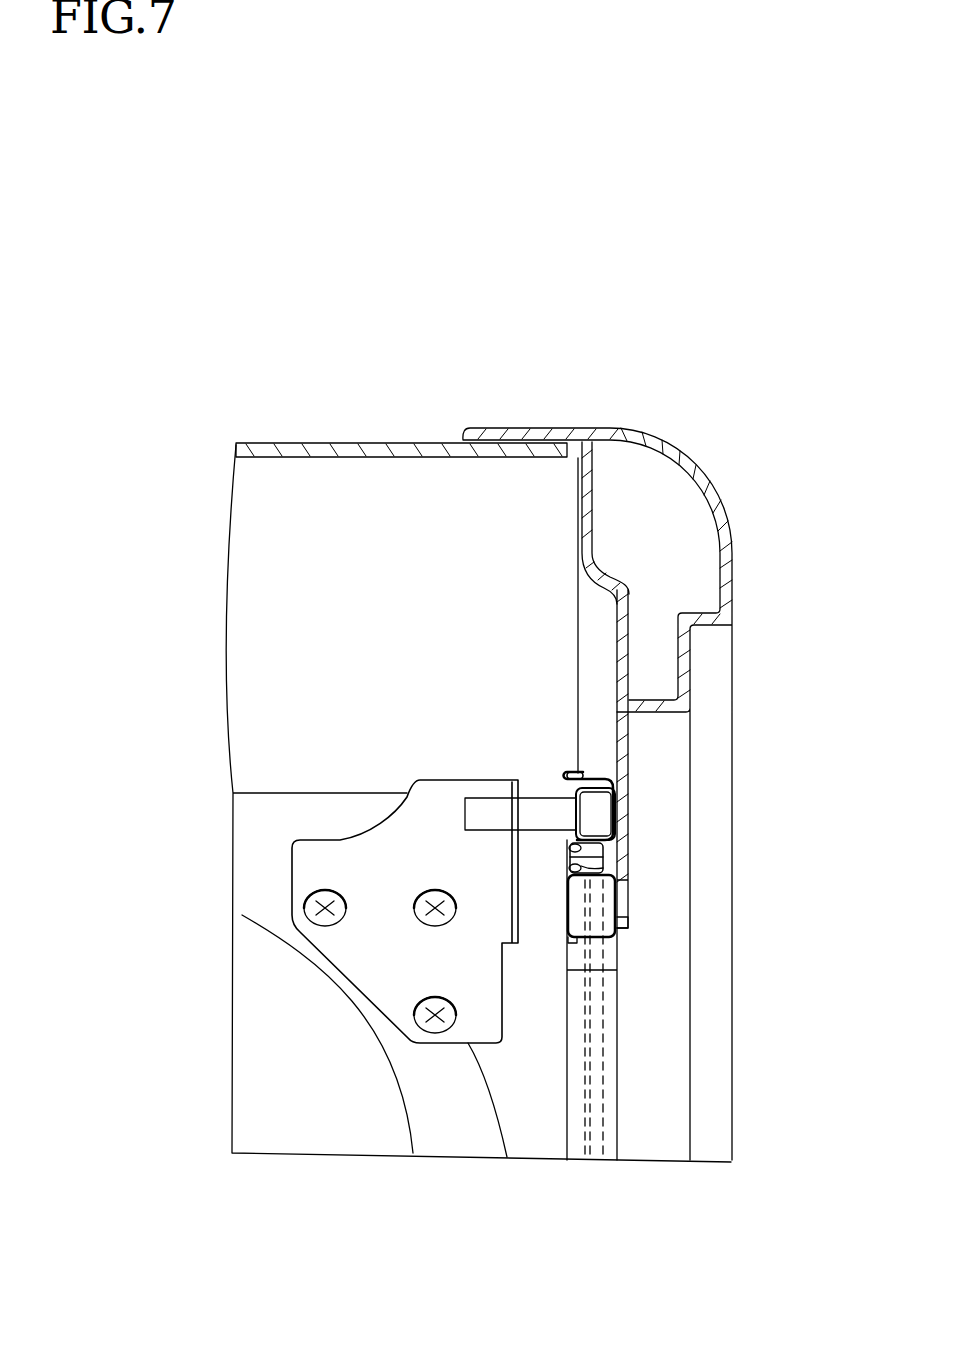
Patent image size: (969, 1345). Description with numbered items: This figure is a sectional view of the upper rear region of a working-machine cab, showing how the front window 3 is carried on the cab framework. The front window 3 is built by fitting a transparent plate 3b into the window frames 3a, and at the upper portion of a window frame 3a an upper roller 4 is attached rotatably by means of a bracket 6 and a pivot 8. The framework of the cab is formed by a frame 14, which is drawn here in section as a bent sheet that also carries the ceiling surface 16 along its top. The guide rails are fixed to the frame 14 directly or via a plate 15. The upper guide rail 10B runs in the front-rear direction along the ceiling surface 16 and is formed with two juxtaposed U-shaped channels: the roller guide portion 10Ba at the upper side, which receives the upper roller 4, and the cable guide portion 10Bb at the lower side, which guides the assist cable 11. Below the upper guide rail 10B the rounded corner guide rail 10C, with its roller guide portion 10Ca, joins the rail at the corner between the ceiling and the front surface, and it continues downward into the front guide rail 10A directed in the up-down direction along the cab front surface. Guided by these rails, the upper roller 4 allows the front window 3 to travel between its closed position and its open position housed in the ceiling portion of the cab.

The front window 3 is at (290, 790).
The window frames 3a is at (452, 1117).
The transparent plate 3b is at (268, 1048).
The upper rollers 4 is at (590, 813).
The brackets 6 is at (380, 960).
The pivots 8 is at (540, 813).
The front guide rail 10A is at (622, 1112).
The upper guide rail 10B is at (600, 773).
The roller guide portion 10Ba is at (593, 770).
The cable guide portion 10Bb is at (590, 855).
The corner guide rail 10C is at (622, 920).
The roller guide portion 10Ca is at (580, 920).
The assist cable 11 is at (602, 868).
The frames 14 is at (687, 487).
The plates 15 is at (622, 780).
The ceiling surface 16 is at (370, 441).